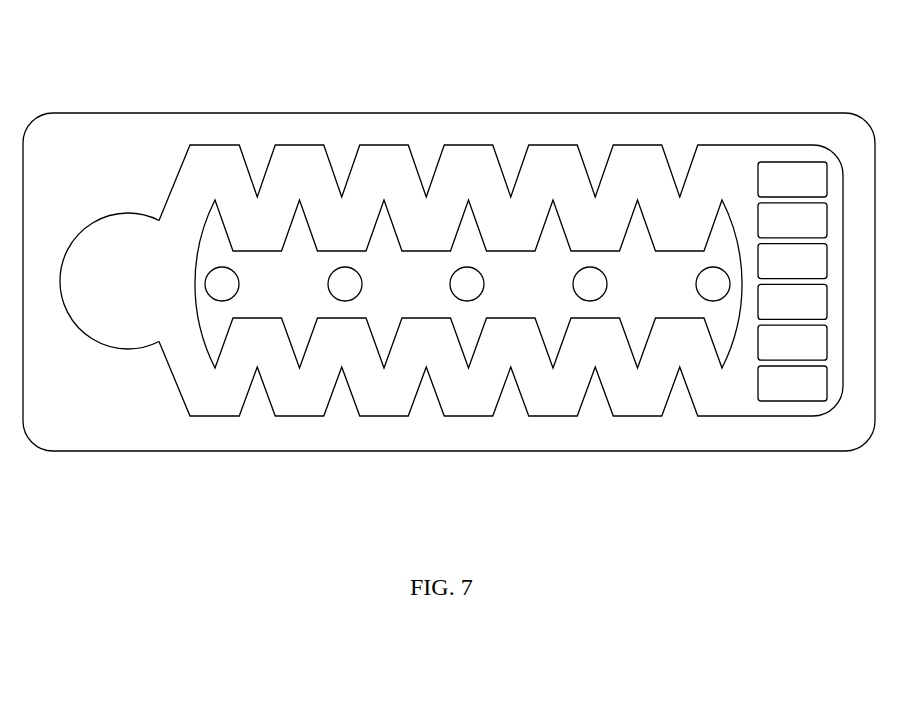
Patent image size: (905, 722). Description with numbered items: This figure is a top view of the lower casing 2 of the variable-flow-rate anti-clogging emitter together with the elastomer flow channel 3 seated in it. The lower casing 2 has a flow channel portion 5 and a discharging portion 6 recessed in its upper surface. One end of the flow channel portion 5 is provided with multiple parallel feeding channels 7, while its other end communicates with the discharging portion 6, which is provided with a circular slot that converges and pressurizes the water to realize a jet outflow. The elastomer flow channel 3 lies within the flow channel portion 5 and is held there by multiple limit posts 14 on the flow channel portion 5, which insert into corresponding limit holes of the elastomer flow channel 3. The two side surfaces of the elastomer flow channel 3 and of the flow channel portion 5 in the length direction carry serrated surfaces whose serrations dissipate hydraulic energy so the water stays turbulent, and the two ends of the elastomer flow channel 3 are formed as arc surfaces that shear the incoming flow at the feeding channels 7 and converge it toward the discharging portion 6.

The lower casing 2 is at (265, 130).
The elastomer flow channel 3 is at (514, 277).
The flow channel portion 5 is at (420, 303).
The discharging portion 6 is at (125, 261).
The feeding channels 7 is at (789, 245).
The limit posts 14 is at (350, 271).